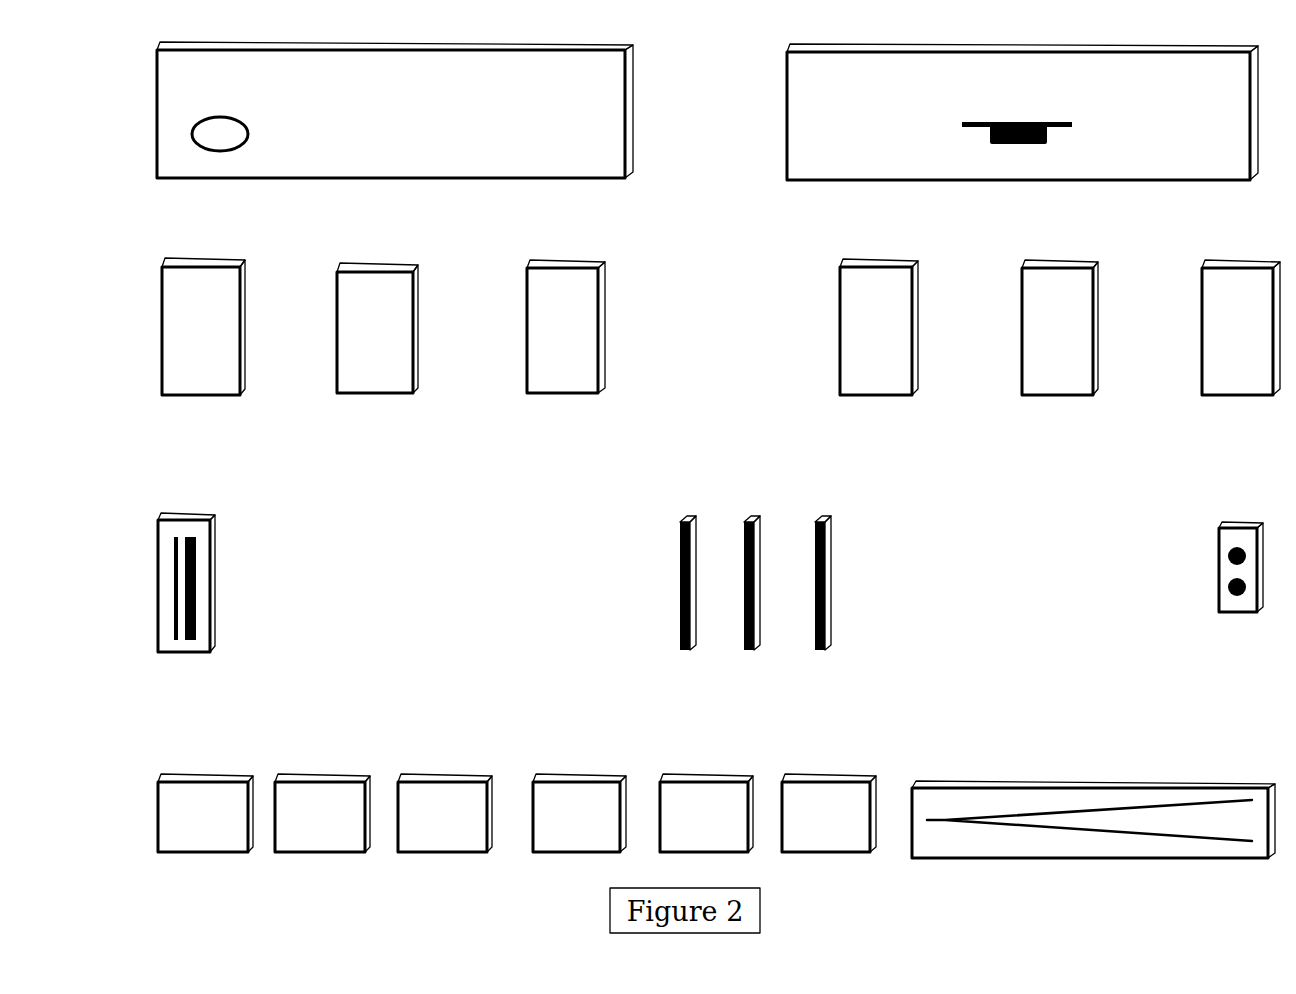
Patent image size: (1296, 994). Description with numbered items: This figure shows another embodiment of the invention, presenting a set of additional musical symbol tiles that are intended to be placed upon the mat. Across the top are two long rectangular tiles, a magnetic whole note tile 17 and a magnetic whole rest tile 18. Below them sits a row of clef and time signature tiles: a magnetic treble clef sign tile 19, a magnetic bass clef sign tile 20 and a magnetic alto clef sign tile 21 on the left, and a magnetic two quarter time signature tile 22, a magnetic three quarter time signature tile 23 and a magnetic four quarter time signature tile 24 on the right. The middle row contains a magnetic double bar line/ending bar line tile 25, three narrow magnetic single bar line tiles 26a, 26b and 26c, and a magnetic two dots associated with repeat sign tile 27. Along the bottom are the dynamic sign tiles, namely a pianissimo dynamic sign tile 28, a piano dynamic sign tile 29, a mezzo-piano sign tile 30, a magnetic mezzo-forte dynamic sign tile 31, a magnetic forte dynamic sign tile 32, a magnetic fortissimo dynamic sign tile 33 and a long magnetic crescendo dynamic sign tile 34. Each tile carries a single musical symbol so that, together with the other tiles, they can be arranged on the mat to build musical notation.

The magnetic whole note tile 17 is at (412, 83).
The magnetic whole rest tile 18 is at (1033, 80).
The magnetic treble clef sign tile 19 is at (230, 290).
The magnetic bass clef sign tile 20 is at (365, 283).
The magnetic alto clef sign tile 21 is at (555, 281).
The magnetic two quarter time signature tile 22 is at (904, 284).
The magnetic three quarter time signature tile 23 is at (1083, 283).
The magnetic four quarter time signature tile 24 is at (1265, 286).
The magnetic double bar line/ending bar line tile 25 is at (210, 583).
The magnetic single bar line tile 26a is at (702, 562).
The magnetic single bar line tile 26b is at (766, 562).
The magnetic single bar line tile 26c is at (836, 562).
The magnetic two dots associated with repeat sign tile 27 is at (1232, 552).
The pianissimo dynamic sign tile 28 is at (216, 790).
The piano dynamic sign tile 29 is at (334, 790).
The mezzo-piano sign tile 30 is at (451, 790).
The magnetic mezzo-forte dynamic sign tile 31 is at (584, 792).
The magnetic forte dynamic sign tile 32 is at (733, 800).
The magnetic fortissimo dynamic sign tile 33 is at (858, 800).
The magnetic crescendo dynamic sign tile 34 is at (1060, 796).